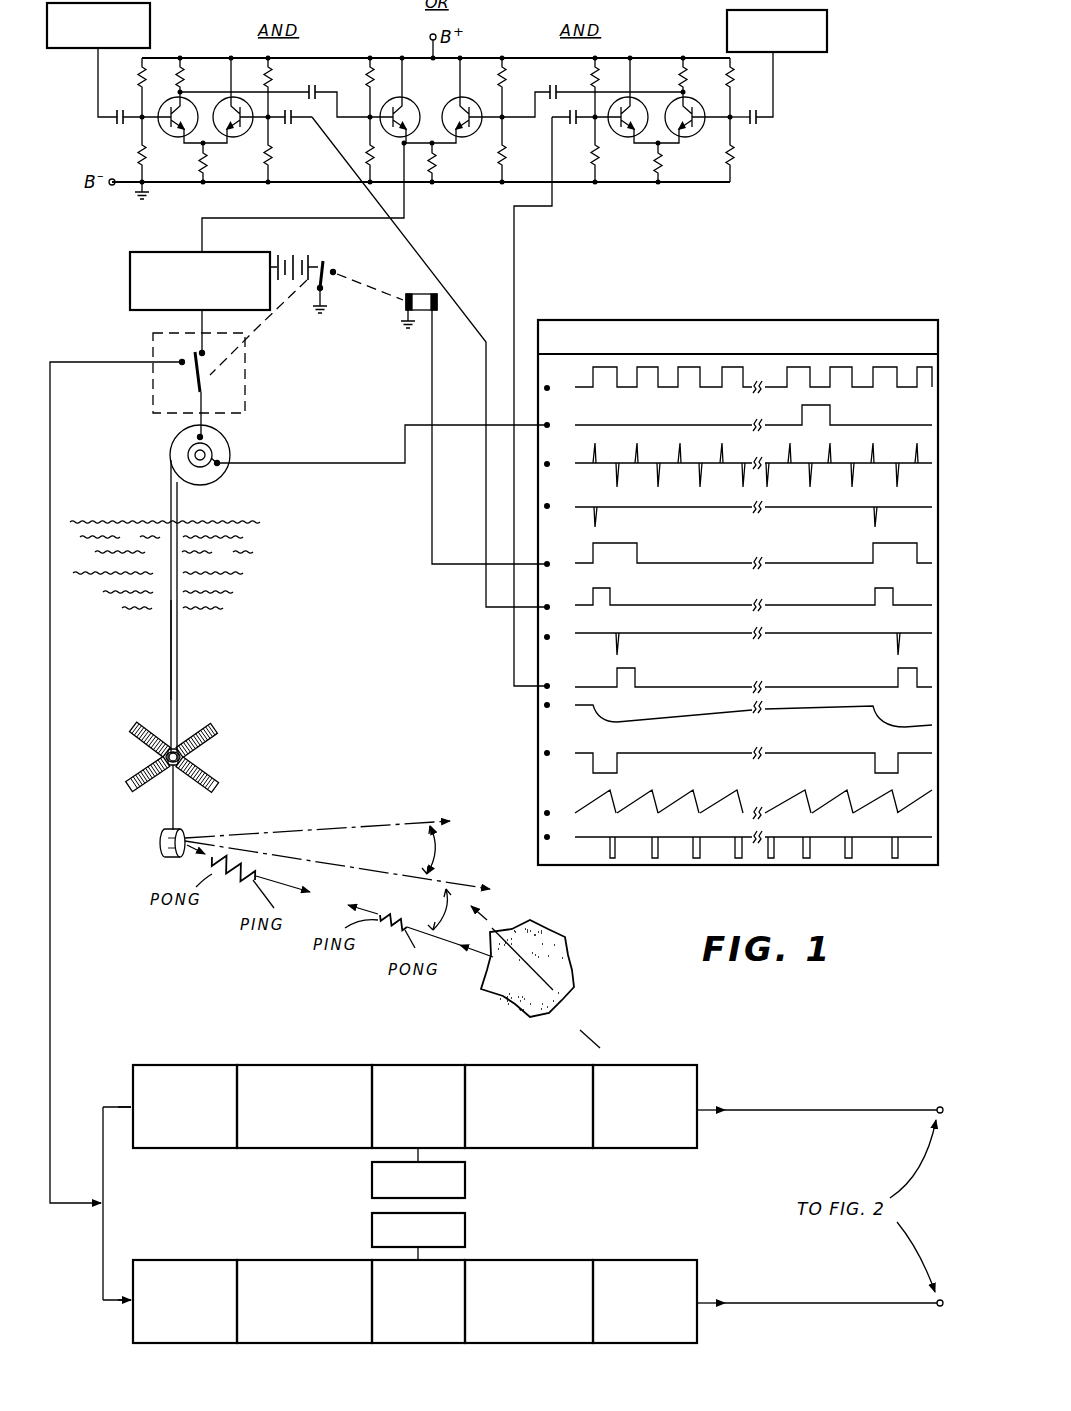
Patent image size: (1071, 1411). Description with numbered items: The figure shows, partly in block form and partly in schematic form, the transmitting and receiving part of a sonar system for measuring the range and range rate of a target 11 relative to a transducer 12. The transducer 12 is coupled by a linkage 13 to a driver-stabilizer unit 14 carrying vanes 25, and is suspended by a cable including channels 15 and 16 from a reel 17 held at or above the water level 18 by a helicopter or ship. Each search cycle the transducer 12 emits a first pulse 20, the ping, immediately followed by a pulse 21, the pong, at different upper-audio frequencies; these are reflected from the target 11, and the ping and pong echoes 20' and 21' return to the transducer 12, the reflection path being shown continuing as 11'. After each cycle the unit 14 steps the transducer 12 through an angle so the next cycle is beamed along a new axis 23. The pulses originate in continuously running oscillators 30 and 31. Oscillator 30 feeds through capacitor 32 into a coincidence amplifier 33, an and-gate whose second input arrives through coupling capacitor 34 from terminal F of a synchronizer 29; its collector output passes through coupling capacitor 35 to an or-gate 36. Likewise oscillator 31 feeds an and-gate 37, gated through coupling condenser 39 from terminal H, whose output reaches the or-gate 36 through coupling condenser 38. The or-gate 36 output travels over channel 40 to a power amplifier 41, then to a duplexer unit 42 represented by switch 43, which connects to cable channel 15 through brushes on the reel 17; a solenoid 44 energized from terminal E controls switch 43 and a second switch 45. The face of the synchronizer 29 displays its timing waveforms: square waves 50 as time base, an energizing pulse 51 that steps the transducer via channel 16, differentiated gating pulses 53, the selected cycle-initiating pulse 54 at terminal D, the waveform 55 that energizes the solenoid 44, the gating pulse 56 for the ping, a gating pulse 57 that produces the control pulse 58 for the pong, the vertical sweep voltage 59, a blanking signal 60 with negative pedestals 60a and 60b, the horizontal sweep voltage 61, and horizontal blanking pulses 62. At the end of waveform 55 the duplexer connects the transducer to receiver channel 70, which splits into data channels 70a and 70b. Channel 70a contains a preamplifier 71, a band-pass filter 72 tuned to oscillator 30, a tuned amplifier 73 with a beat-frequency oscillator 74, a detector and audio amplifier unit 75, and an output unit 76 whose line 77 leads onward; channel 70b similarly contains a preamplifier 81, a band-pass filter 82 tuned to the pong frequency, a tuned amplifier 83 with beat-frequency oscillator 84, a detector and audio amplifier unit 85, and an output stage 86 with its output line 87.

The target 11 is at (536, 960).
The target path 11' is at (587, 1024).
The transducer 12 is at (160, 848).
The linkage 13 is at (174, 812).
The driver-stabilizer unit 14 is at (170, 776).
The cable channel 15 is at (178, 653).
The cable channel 16 is at (170, 660).
The reel 17 is at (221, 447).
The water level 18 is at (142, 520).
The first pulse (ping) 20 is at (248, 868).
The ping echo 20' is at (420, 918).
The second pulse (pong) 21 is at (241, 827).
The pong echo 21' is at (415, 908).
The axis 23 is at (450, 884).
The vanes 25 is at (205, 776).
The synchronizer 29 is at (738, 575).
The oscillator 30 is at (150, 18).
The oscillator 31 is at (827, 20).
The capacitor 32 is at (120, 108).
The coincidence amplifier (and-gate) 33 is at (213, 139).
The coupling capacitor 34 is at (288, 124).
The coupling capacitor 35 is at (312, 87).
The or-gate 36 is at (436, 139).
The and-gate 37 is at (662, 139).
The coupling condenser 38 is at (553, 85).
The coupling condenser 39 is at (575, 125).
The channel 40 is at (333, 218).
The power amplifier 41 is at (180, 252).
The duplexer unit 42 is at (158, 348).
The switch 43 is at (203, 370).
The solenoid (relay coil) 44 is at (410, 294).
The second switch 45 is at (325, 278).
The square waves 50 is at (647, 382).
The energizing pulse 51 is at (827, 415).
The gating pulses 53 is at (641, 457).
The waveform D spike 54 is at (598, 511).
The waveform 55 is at (634, 554).
The gating pulse 56 is at (610, 596).
The gating pulse 57 is at (621, 647).
The control pulse 58 is at (636, 678).
The vertical sweep voltage 59 is at (676, 717).
The cathode-ray blanking signal 60 is at (652, 754).
The negative pedestal 60a is at (602, 763).
The negative pedestal 60b is at (887, 763).
The horizontal sweep voltage 61 is at (842, 790).
The blanking pulses 62 is at (872, 837).
The receiver channel 70 is at (50, 942).
The first data channel 70a is at (103, 1170).
The second data channel 70b is at (103, 1282).
The preamplifier 71 is at (207, 1063).
The band-pass filter 72 is at (315, 1063).
The tuned amplifier 73 is at (432, 1063).
The beat-frequency oscillator 74 is at (465, 1181).
The detector and audio amplifier unit 75 is at (545, 1063).
The output unit 76 is at (668, 1063).
The output line 77 is at (765, 1110).
The preamplifier 81 is at (204, 1258).
The band-pass filter 82 is at (313, 1258).
The tuned amplifier 83 is at (375, 1258).
The beat-frequency oscillator 84 is at (465, 1231).
The detector and audio amplifier unit 85 is at (580, 1258).
The output stage 86 is at (653, 1258).
The output line 87 is at (769, 1303).